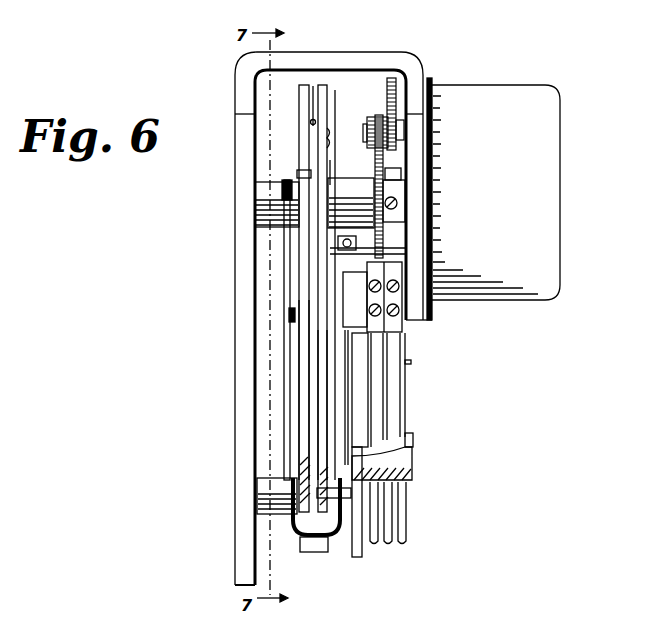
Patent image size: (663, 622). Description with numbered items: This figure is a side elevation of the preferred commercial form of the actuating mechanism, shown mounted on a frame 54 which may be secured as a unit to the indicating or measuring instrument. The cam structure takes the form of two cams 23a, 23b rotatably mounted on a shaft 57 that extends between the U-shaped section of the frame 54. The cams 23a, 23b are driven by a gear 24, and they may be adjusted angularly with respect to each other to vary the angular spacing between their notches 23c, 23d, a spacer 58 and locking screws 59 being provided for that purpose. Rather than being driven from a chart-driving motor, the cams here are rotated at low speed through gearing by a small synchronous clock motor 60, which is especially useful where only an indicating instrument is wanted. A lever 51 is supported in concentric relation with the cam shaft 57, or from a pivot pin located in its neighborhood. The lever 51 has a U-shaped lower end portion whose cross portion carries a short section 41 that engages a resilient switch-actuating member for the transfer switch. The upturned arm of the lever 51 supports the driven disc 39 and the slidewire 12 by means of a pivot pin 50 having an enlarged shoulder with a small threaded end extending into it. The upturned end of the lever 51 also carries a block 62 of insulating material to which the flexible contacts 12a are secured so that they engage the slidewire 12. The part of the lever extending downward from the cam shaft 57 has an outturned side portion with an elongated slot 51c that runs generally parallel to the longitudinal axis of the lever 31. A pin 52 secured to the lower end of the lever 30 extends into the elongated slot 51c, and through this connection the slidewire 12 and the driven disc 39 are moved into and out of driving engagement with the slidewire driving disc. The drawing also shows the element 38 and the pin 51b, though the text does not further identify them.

The slidewire 12 is at (378, 545).
The flexible contacts 12a is at (382, 385).
The cam 23a is at (300, 87).
The cam 23b is at (328, 97).
The notch 23c is at (306, 173).
The notch 23d is at (329, 170).
The gear 24 is at (368, 211).
The lever 30 is at (320, 432).
The lever 31 is at (303, 402).
The pin 38 is at (288, 322).
The driven disc 39 is at (362, 557).
The short section 41 is at (308, 552).
The pivot pin 50 is at (413, 470).
The lever 51 is at (285, 293).
The projection 51b is at (282, 184).
The elongated slot 51c is at (342, 505).
The pin 52 is at (326, 505).
The frame 54 is at (388, 55).
The shaft 57 is at (253, 215).
The spacer 58 is at (315, 90).
The locking screws 59 is at (331, 147).
The clock motor 60 is at (560, 156).
The block 62 is at (358, 280).